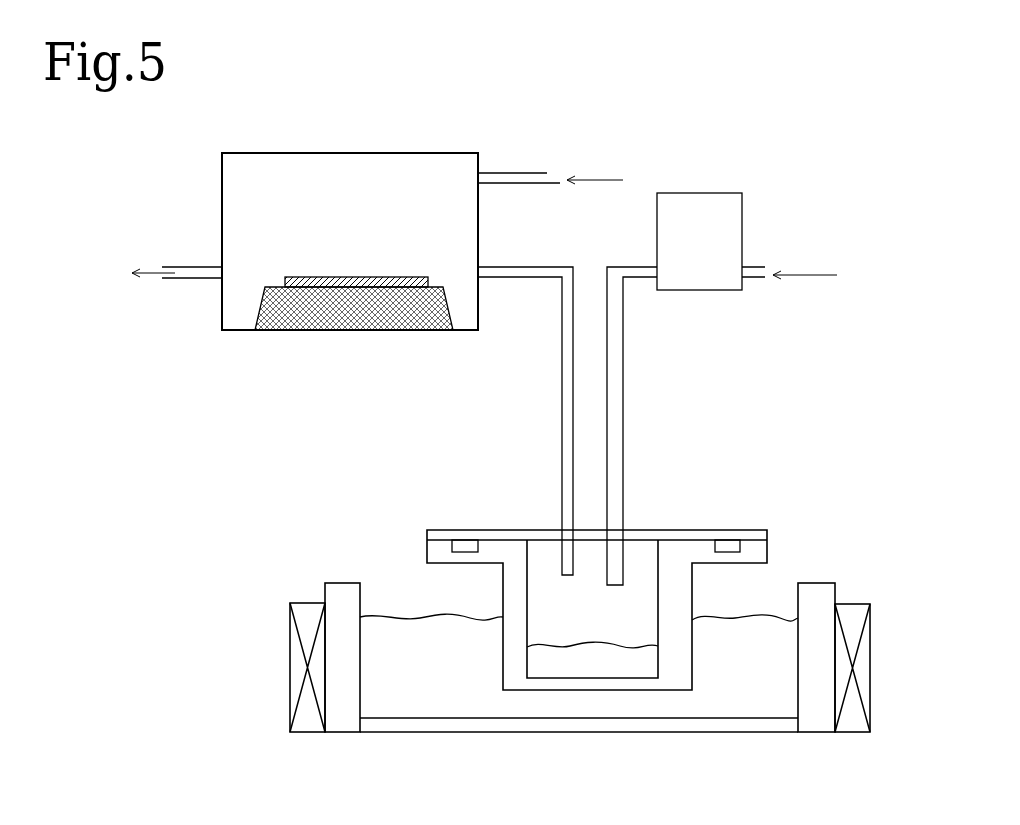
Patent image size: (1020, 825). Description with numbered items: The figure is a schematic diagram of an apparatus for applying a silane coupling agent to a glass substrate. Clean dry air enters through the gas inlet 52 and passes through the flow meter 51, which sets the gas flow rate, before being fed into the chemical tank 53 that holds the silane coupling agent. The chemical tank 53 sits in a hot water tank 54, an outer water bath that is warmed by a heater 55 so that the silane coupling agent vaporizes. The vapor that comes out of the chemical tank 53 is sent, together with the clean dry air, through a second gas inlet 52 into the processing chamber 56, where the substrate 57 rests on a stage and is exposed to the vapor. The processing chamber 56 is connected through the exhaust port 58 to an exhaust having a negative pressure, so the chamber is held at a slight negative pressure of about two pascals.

The flow meter 51 is at (722, 213).
The gas inlet 52 is at (547, 173).
The chemical tank 53 is at (553, 652).
The hot water tank 54 is at (577, 712).
The heater 55 is at (870, 662).
The processing chamber 56 is at (222, 170).
The substrate 57 is at (300, 277).
The exhaust port 58 is at (185, 278).